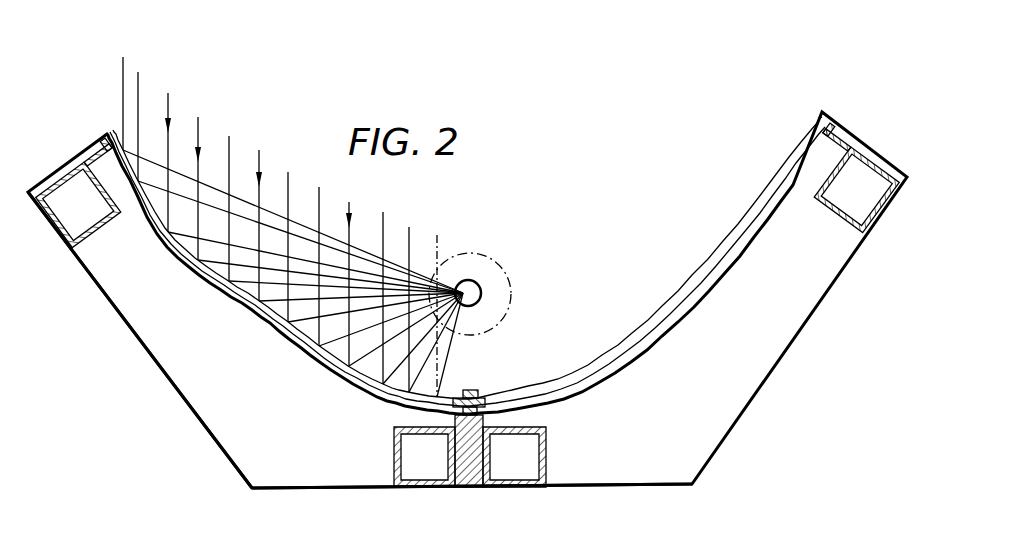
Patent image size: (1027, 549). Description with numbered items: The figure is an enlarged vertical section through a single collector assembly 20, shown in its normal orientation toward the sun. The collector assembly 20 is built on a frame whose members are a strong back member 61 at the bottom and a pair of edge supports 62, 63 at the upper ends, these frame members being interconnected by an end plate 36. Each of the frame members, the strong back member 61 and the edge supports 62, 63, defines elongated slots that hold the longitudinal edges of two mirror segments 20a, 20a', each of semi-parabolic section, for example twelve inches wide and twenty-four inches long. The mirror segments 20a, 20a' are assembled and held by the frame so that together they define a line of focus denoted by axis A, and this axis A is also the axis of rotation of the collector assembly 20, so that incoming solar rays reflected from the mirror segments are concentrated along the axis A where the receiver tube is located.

The collector assembly 20 is at (97, 260).
The mirror segment 20a is at (647, 267).
The mirror segment 20a' is at (290, 277).
The end plate 36 is at (158, 364).
The strong back member 61 is at (396, 488).
The edge support 62 is at (82, 164).
The edge support 63 is at (868, 160).
The axis A is at (478, 283).